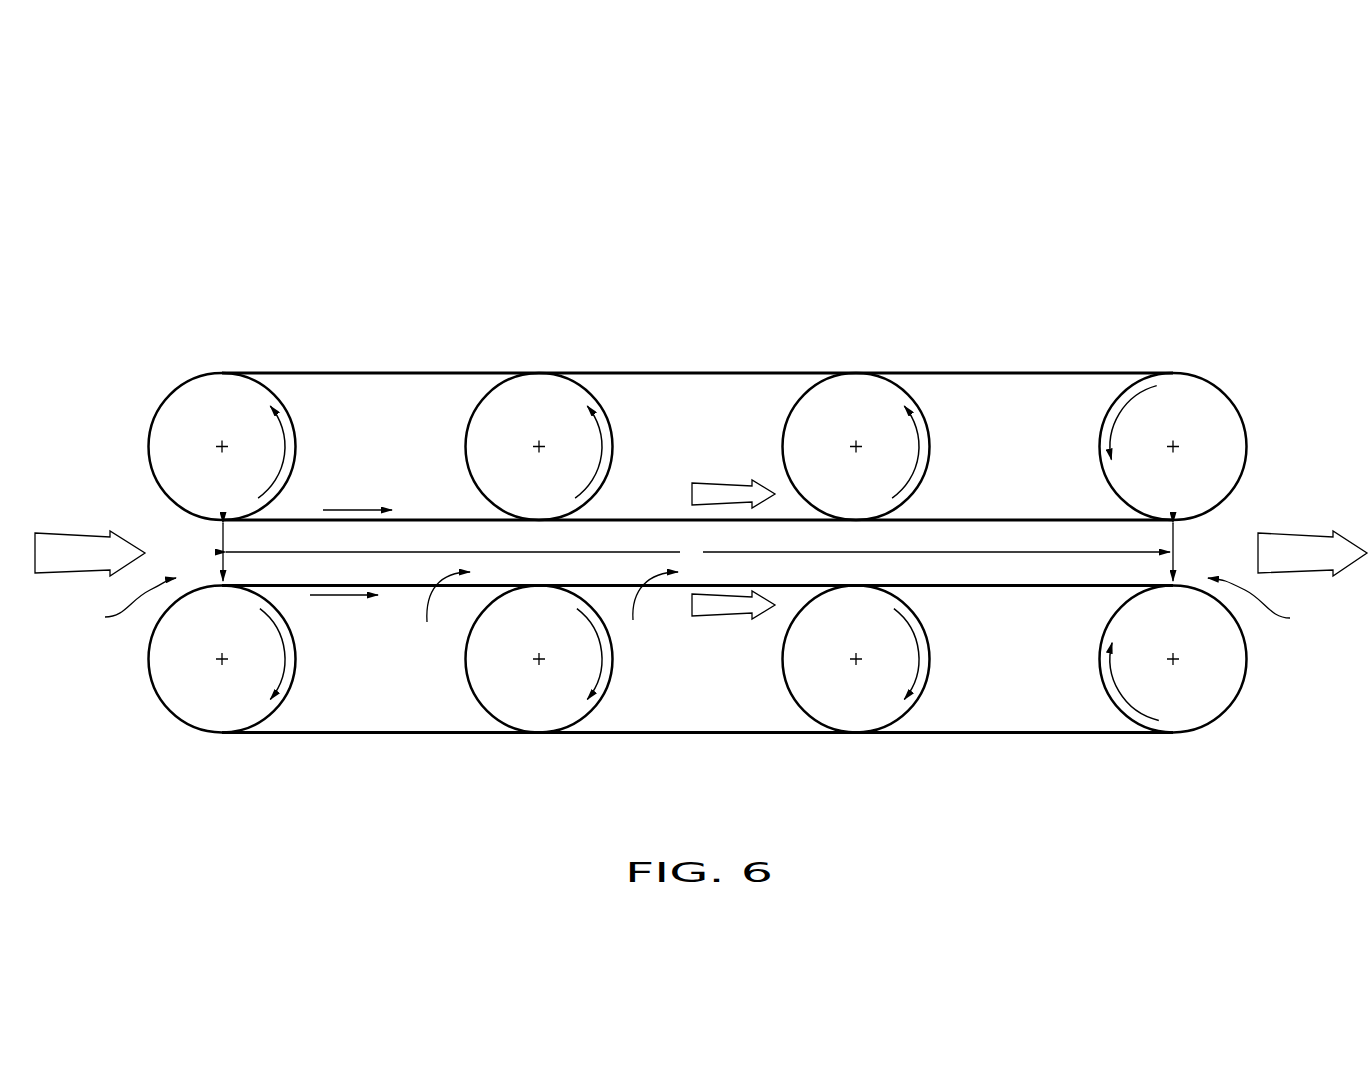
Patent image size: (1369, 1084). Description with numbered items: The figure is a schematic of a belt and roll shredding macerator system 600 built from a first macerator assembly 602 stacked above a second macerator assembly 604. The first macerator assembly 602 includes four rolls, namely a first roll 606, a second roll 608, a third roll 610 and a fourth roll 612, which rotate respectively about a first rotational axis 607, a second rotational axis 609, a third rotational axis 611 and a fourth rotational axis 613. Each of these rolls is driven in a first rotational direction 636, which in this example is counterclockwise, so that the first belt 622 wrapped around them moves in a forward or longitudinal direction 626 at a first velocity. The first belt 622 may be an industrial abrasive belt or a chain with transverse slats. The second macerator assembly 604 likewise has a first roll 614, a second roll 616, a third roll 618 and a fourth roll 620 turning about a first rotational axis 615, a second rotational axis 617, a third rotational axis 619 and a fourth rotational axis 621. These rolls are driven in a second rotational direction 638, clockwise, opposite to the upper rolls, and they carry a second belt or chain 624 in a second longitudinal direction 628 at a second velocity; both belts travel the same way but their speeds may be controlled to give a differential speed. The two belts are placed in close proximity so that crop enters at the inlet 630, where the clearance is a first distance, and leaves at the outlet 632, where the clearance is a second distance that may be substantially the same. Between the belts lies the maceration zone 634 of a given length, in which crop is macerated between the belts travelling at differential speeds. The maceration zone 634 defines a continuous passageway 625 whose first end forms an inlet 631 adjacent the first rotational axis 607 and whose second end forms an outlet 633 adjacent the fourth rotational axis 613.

The belt and roll shredding macerator system 600 is at (198, 224).
The first macerator assembly 602 is at (171, 377).
The second macerator assembly 604 is at (167, 738).
The first roll 606 is at (278, 389).
The first rotational axis 607 is at (222, 446).
The second roll 608 is at (592, 389).
The second rotational axis 609 is at (539, 446).
The third roll 610 is at (907, 389).
The third rotational axis 611 is at (856, 446).
The fourth roll 612 is at (1112, 491).
The fourth rotational axis 613 is at (1174, 446).
The first roll 614 is at (279, 708).
The first rotational axis 615 is at (222, 660).
The second roll 616 is at (488, 708).
The second rotational axis 617 is at (539, 660).
The third roll 618 is at (906, 708).
The third rotational axis 619 is at (856, 660).
The fourth roll 620 is at (1114, 612).
The fourth rotational axis 621 is at (1174, 660).
The first belt 622 is at (446, 372).
The second belt or chain 624 is at (632, 733).
The continuous passageway 625 is at (441, 614).
The forward or longitudinal direction 626 is at (352, 508).
The second longitudinal direction 628 is at (350, 598).
The inlet 630 is at (68, 532).
The inlet of the passageway 631 is at (115, 603).
The outlet 632 is at (1297, 532).
The outlet of the passageway 633 is at (1279, 603).
The maceration zone 634 is at (649, 614).
The first rotational direction 636 is at (286, 446).
The second rotational direction 638 is at (286, 655).